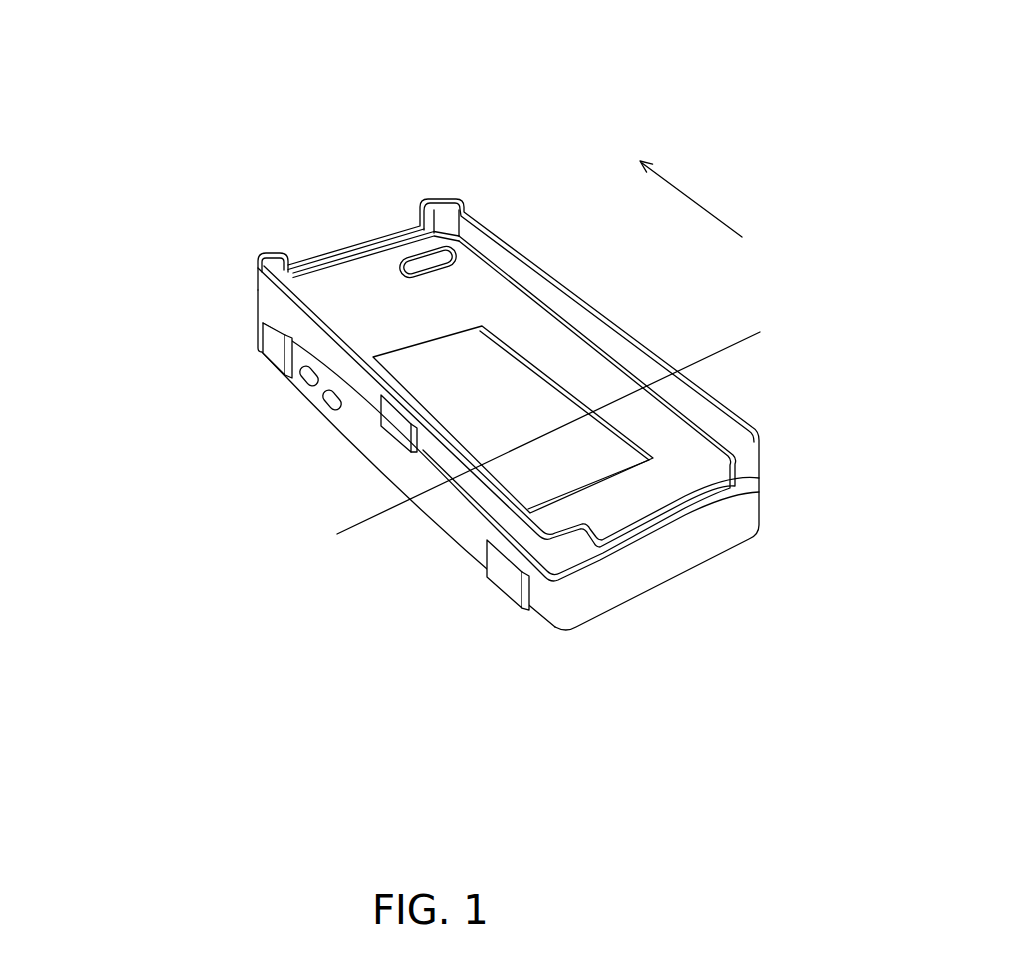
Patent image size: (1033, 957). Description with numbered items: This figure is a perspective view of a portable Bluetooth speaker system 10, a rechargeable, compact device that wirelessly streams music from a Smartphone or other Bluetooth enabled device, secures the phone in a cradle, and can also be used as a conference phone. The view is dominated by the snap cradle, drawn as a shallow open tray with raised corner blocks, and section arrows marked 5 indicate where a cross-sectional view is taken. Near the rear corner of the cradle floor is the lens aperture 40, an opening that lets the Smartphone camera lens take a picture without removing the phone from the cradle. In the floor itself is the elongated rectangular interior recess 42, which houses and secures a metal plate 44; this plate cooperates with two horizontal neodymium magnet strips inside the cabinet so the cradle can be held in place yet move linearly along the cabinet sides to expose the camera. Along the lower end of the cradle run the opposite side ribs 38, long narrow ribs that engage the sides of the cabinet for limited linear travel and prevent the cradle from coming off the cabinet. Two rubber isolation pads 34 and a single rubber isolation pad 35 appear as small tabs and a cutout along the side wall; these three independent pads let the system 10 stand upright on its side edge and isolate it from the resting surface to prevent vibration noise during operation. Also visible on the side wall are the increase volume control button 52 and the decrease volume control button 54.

The portable Bluetooth speaker system 10 is at (284, 112).
The section line 5- 5 is at (758, 331).
The rubber isolation pads 34 is at (272, 349).
The rubber isolation pad 35 is at (398, 428).
The side ribs 38 is at (460, 499).
The lens aperture 40 is at (418, 256).
The interior recess 42 is at (510, 343).
The metal plate 44 is at (580, 470).
The increase volume control button 52 is at (324, 404).
The decrease volume control button 54 is at (300, 382).